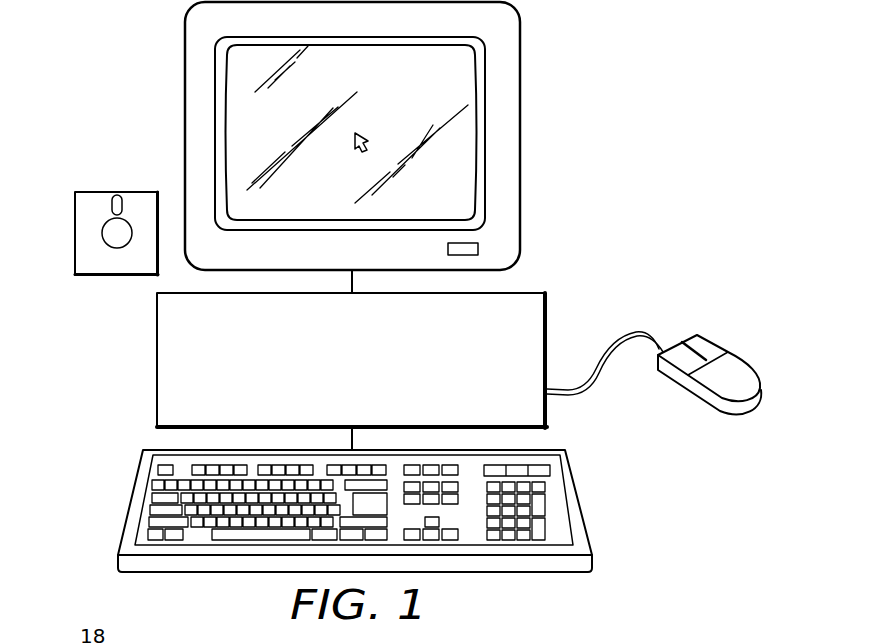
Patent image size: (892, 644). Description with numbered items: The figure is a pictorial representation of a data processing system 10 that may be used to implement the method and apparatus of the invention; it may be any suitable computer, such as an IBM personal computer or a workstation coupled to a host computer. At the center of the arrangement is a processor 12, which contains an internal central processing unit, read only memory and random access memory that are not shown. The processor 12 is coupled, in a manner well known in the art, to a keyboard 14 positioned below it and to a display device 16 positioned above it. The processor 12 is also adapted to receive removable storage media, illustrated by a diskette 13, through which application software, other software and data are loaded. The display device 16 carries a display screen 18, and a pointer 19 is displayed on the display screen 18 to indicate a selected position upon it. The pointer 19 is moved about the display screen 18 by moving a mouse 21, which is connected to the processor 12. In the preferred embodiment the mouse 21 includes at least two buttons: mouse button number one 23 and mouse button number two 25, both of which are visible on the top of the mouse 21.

The data processing system 10 is at (578, 251).
The processor 12 is at (545, 313).
The diskette 13 is at (100, 200).
The keyboard 14 is at (585, 507).
The display device 16 is at (520, 170).
The display screen 18 is at (470, 115).
The pointer 19 is at (371, 140).
The mouse 21 is at (654, 376).
The mouse button number one 23 is at (677, 346).
The mouse button number two 25 is at (705, 347).